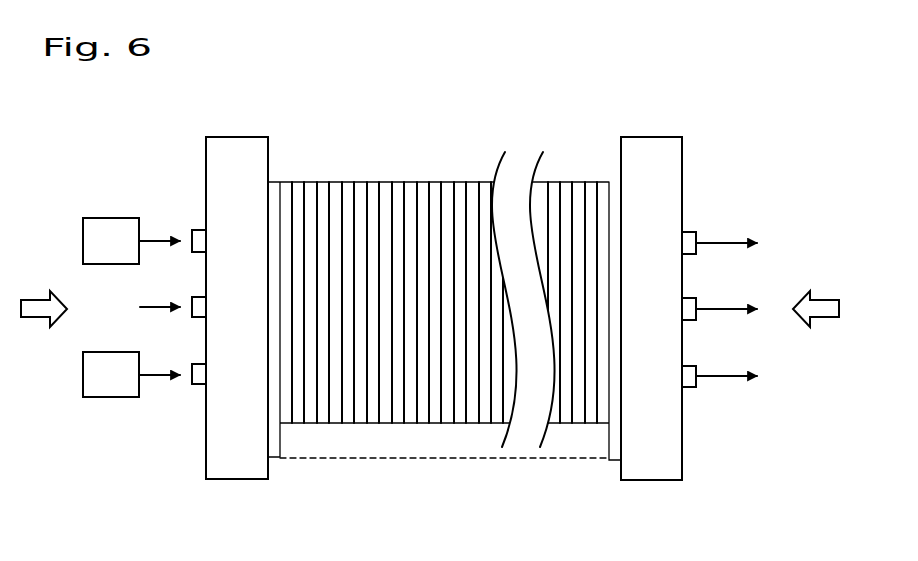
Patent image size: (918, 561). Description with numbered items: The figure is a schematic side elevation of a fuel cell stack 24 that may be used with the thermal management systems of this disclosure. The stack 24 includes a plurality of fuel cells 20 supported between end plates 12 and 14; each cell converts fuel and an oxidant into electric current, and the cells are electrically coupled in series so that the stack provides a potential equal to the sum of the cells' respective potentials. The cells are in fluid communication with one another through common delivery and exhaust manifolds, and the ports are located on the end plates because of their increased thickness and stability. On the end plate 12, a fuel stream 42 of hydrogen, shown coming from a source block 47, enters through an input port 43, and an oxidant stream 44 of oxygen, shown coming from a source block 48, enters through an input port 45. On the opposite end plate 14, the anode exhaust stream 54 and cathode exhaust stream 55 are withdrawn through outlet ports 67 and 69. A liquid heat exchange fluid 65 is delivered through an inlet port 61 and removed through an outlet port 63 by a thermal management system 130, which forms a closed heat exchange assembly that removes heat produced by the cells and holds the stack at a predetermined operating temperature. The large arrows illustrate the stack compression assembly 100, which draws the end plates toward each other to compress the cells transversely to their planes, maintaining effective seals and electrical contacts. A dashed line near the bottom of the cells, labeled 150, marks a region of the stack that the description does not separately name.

The end plate 12 is at (236, 137).
The end plate 14 is at (648, 137).
The fuel cells 20 is at (334, 176).
The fuel cell stack 24 is at (738, 95).
The fuel stream 42 is at (166, 238).
The input port 43 is at (197, 230).
The oxidant stream 44 is at (166, 372).
The input port 45 is at (197, 385).
The first fluid source 47 is at (111, 241).
The second fluid source 48 is at (111, 374).
The anode exhaust stream 54 is at (734, 241).
The cathode exhaust stream 55 is at (734, 375).
The inlet port 61 is at (196, 297).
The outlet port 63 is at (690, 320).
The liquid heat exchange fluid 65 is at (153, 306).
The outlet port 67 is at (690, 254).
The outlet port 69 is at (690, 387).
The stack compression assembly 100 is at (41, 320).
The thermal management system 130 is at (792, 274).
The header tank region 150 is at (273, 460).